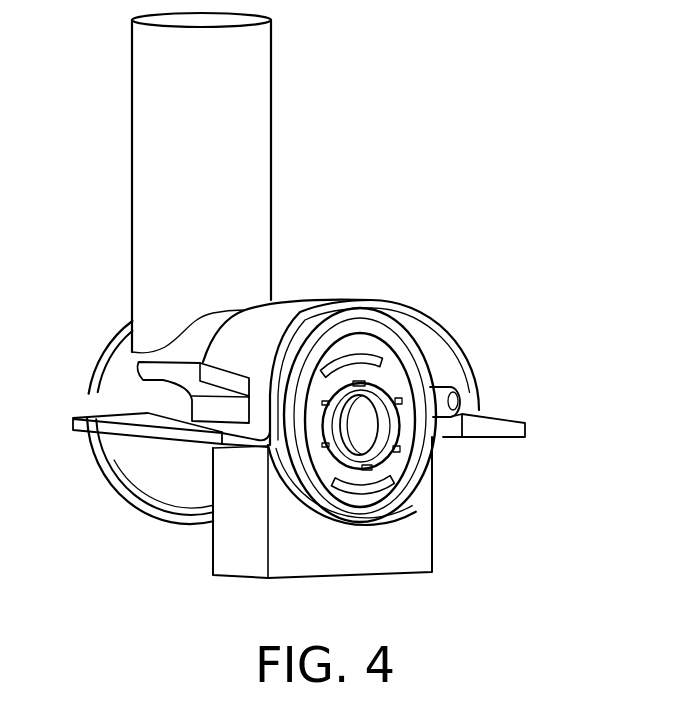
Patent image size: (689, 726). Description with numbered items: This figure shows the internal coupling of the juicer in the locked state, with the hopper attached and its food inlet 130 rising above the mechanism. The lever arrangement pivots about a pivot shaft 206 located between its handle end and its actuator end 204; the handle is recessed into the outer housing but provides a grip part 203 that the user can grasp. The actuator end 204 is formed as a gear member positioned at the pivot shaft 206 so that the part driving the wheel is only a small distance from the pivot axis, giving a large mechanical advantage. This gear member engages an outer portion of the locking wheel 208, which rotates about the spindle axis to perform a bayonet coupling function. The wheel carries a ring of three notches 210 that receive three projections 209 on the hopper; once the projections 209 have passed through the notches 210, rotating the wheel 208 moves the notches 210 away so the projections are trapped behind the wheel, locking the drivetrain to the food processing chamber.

The food inlet 130 is at (132, 163).
The grip part 203 is at (138, 380).
The actuator end 204 is at (440, 412).
The pivot shaft 206 is at (457, 398).
The locking wheel 208 is at (310, 450).
The projections 209 is at (388, 392).
The notches 210 is at (330, 398).